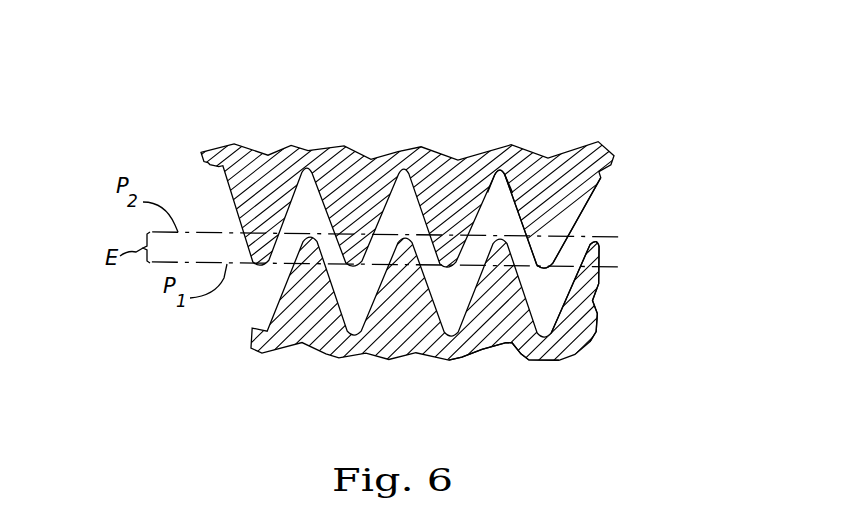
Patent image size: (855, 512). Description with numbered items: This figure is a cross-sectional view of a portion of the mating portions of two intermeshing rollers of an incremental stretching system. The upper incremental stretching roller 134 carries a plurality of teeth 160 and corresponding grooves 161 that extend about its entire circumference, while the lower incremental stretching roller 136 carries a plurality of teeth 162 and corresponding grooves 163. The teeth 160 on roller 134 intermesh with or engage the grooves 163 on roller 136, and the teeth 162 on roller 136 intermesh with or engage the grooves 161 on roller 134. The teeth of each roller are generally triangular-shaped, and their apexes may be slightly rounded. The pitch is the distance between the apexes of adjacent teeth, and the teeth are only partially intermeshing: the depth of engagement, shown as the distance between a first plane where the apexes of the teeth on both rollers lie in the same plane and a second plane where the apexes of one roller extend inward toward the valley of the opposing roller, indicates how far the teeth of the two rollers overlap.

The incremental stretching roller 134 is at (366, 252).
The incremental stretching roller 136 is at (425, 322).
The teeth 160 is at (557, 214).
The grooves 161 is at (496, 180).
The teeth 162 is at (575, 306).
The grooves 163 is at (457, 353).